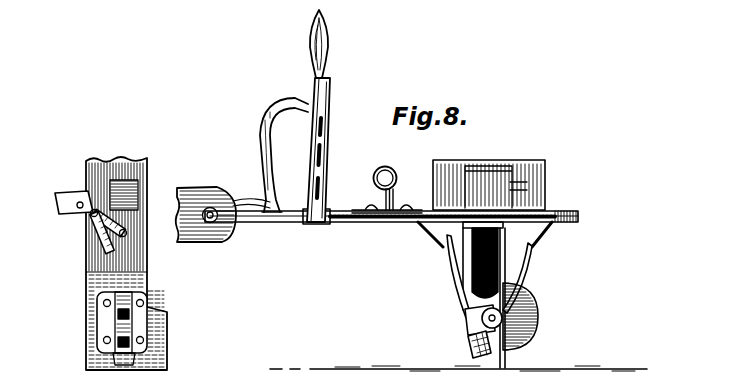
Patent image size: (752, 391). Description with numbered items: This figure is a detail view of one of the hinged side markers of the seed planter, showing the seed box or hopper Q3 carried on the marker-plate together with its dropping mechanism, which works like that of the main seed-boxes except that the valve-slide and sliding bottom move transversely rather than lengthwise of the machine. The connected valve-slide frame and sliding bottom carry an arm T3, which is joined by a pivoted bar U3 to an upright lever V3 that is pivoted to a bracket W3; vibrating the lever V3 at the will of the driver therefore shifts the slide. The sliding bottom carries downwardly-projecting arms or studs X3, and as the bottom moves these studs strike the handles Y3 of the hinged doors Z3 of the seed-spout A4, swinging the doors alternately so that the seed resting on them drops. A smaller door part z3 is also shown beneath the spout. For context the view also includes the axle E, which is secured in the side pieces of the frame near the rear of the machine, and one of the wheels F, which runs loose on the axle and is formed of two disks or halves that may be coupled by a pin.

The wheel F is at (114, 263).
The pivoted bar U3 is at (63, 203).
The arm T3 is at (333, 221).
The seed box Q3 is at (478, 159).
The axle E is at (223, 224).
The seed-spout A4 is at (500, 232).
The upright lever V3 is at (326, 128).
The bracket W3 is at (284, 155).
The downwardly-projecting arms or studs X3 is at (428, 231).
The handles Y3 is at (496, 276).
The hinged doors Z3 is at (472, 334).
The small block z3 is at (483, 350).